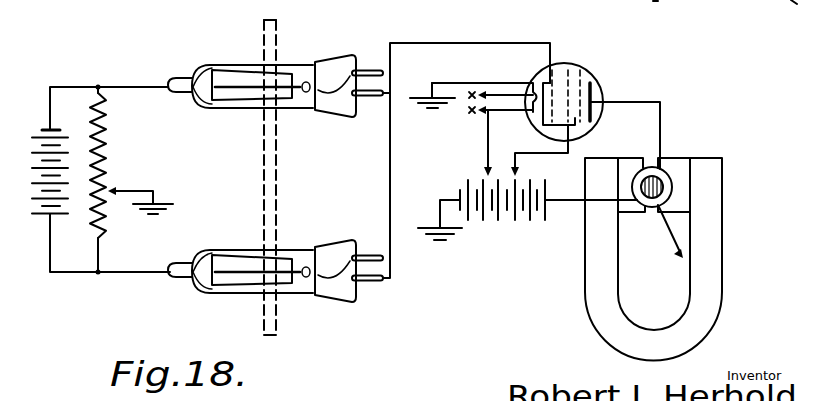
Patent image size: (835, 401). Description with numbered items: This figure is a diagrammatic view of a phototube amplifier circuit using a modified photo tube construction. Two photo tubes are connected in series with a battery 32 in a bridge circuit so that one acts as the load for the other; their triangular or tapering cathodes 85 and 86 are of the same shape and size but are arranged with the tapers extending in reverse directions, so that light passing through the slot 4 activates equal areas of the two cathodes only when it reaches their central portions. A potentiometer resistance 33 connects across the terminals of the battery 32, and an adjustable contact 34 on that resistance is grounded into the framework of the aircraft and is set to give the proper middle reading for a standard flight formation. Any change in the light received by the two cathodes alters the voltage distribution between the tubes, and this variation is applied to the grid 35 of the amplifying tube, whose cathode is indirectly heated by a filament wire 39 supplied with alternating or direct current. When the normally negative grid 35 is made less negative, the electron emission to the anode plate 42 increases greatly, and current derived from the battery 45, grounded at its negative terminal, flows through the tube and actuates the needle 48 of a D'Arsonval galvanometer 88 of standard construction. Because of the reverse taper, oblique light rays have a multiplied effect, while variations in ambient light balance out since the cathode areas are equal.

The slot 4 is at (277, 27).
The battery 32 is at (42, 131).
The potentiometer resistance 33 is at (105, 132).
The adjustable contact 34 is at (155, 198).
The grid 35 is at (558, 63).
The filament wire 39 is at (533, 86).
The anode plate 42 is at (594, 95).
The battery 45 is at (513, 222).
The needle 48 is at (664, 233).
The tapering cathode 85 is at (229, 75).
The tapering cathode 86 is at (230, 262).
The D'Arsonval galvanometer 88 is at (718, 238).